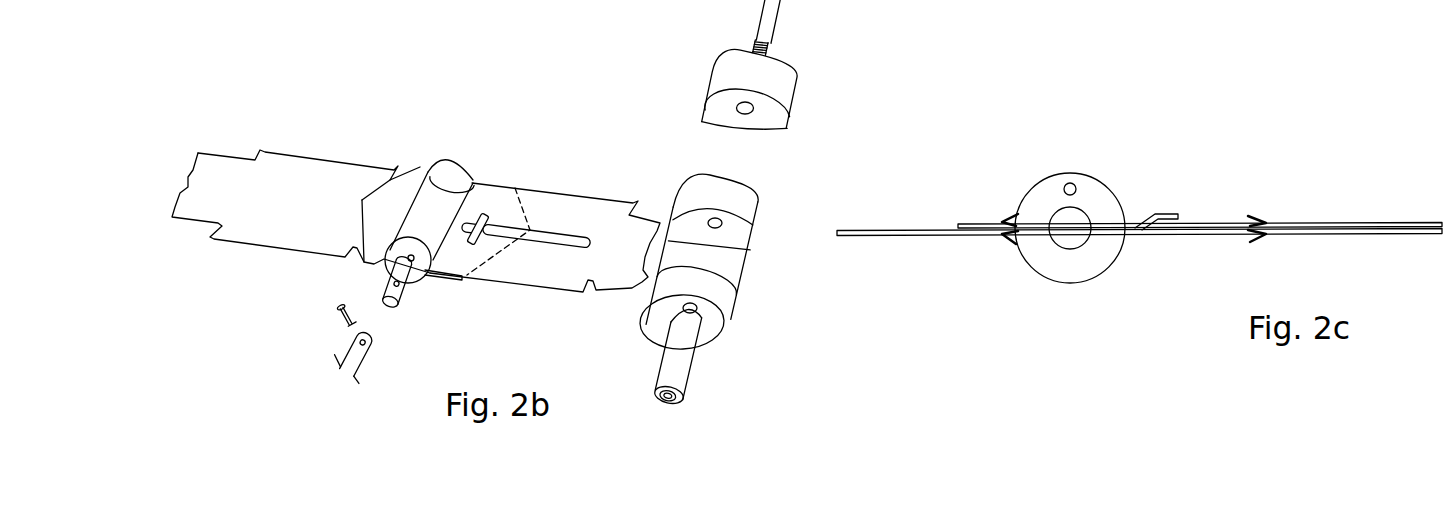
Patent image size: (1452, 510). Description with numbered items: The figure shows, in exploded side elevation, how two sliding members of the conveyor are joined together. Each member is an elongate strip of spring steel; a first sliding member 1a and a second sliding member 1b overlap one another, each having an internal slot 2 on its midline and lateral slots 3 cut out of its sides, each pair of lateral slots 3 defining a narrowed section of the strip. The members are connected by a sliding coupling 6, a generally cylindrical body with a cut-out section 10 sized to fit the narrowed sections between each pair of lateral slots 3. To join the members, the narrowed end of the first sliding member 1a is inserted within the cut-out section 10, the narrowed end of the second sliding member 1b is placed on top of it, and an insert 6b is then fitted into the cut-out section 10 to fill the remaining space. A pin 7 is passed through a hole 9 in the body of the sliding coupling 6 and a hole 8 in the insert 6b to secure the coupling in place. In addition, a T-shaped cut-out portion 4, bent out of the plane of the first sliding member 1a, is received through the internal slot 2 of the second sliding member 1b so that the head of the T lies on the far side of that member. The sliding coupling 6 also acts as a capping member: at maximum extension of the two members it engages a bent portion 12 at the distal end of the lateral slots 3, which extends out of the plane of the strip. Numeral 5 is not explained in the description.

In FIG. 2b, the first sliding member 1a is at (320, 170).
In FIG. 2c, the first sliding member 1a is at (912, 238).
In FIG. 2b, the second sliding member 1b is at (580, 210).
In FIG. 2c, the second sliding member 1b is at (1338, 221).
In FIG. 2b, the internal slot 2 is at (553, 240).
In FIG. 2b, the lateral slots 3 is at (340, 13).
In FIG. 2c, the T-shaped cut-out portion 4 is at (1170, 210).
In FIG. 2b, the hinge 5 is at (568, 14).
In FIG. 2b, the sliding coupling 6 is at (460, 168).
In FIG. 2c, the sliding coupling 6 is at (1087, 280).
In FIG. 2b, the insert 6b is at (775, 87).
In FIG. 2b, the pin 7 is at (777, 5).
In FIG. 2b, the hole 8 is at (695, 312).
In FIG. 2b, the hole 9 is at (721, 223).
In FIG. 2b, the cut-out section 10 is at (730, 263).
In FIG. 2c, the bent portion 12 is at (1010, 221).